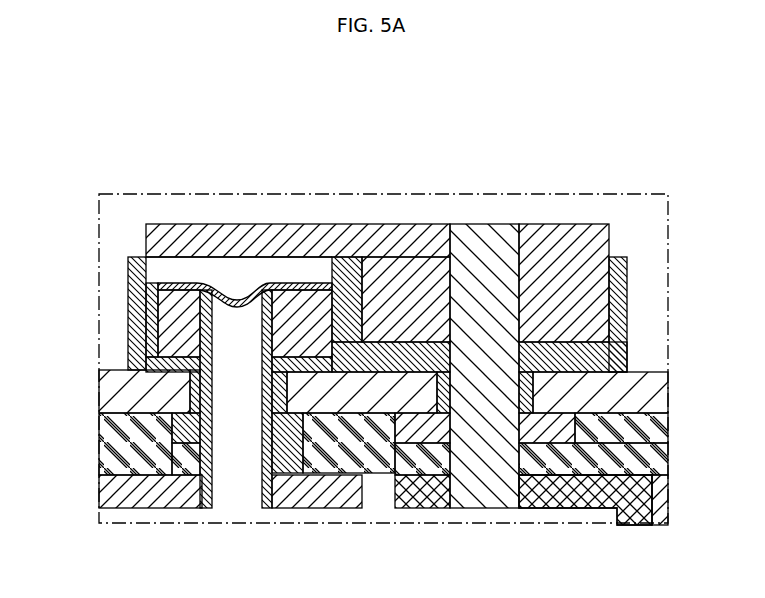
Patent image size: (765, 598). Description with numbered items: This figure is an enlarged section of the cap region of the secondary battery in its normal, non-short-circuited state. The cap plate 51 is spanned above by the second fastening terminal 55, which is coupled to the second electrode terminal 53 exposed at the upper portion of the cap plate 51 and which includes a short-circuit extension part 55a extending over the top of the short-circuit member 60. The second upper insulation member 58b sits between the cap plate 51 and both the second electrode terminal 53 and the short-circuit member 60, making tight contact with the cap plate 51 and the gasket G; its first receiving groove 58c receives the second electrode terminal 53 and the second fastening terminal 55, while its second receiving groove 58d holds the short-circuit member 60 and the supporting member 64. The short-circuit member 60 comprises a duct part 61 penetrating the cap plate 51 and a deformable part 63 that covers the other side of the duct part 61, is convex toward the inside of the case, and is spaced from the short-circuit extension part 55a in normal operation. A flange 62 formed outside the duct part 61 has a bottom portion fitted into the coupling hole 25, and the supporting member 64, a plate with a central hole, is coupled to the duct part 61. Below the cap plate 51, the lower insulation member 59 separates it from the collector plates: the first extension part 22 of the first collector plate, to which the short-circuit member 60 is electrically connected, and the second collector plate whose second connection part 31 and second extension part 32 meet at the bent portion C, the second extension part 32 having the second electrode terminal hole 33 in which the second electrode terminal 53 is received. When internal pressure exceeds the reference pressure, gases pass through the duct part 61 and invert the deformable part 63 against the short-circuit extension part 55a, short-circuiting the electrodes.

The second fastening terminal 55 is at (376, 224).
The short-circuit extension part 55a is at (303, 233).
The second electrode terminal 53 is at (487, 230).
The first receiving groove 58c is at (606, 287).
The second upper insulation member 58b is at (615, 258).
The second receiving groove 58d is at (133, 268).
The short-circuit member 60 is at (225, 282).
The deformable part 63 is at (243, 289).
The supporting member 64 is at (160, 336).
The coupling hole 25 is at (210, 492).
The duct part 61 is at (262, 415).
The flange 62 is at (305, 457).
The gasket G is at (153, 433).
The first extension part 22 is at (115, 492).
The cap plate 51 is at (638, 382).
The lower insulation member 59 is at (634, 425).
The second extension part 32 is at (605, 473).
The bent portion C is at (650, 478).
The second connection part 31 is at (652, 507).
The second electrode terminal hole 33 is at (517, 490).